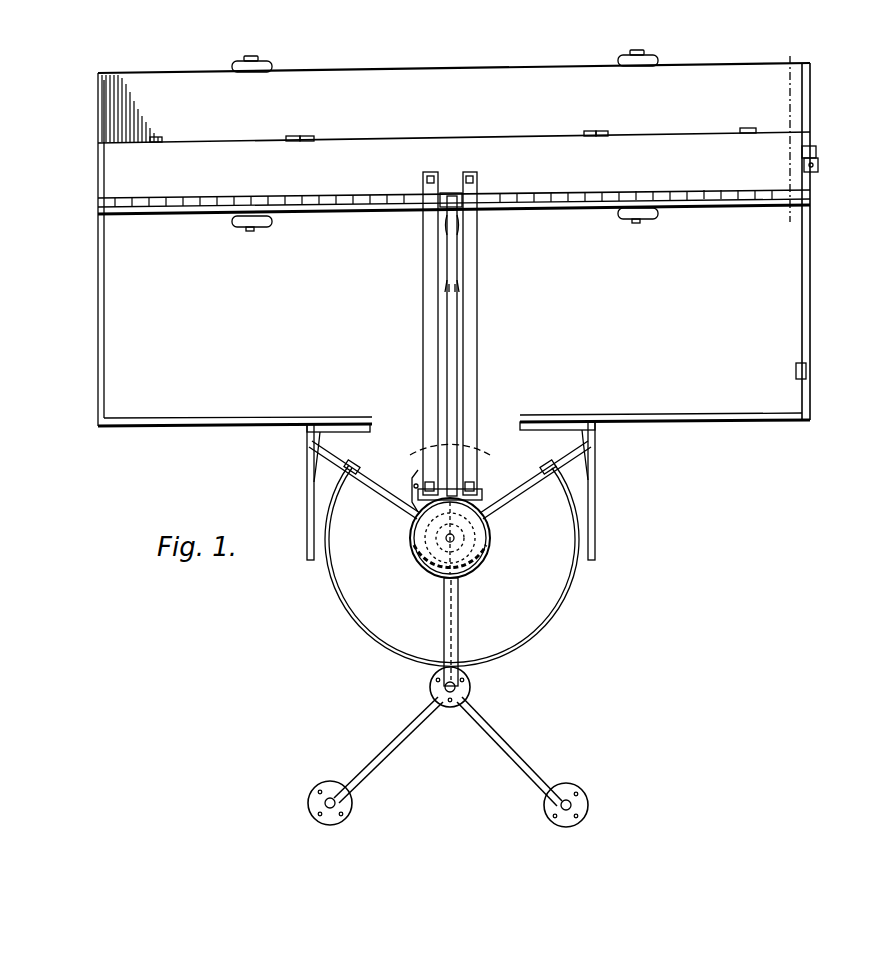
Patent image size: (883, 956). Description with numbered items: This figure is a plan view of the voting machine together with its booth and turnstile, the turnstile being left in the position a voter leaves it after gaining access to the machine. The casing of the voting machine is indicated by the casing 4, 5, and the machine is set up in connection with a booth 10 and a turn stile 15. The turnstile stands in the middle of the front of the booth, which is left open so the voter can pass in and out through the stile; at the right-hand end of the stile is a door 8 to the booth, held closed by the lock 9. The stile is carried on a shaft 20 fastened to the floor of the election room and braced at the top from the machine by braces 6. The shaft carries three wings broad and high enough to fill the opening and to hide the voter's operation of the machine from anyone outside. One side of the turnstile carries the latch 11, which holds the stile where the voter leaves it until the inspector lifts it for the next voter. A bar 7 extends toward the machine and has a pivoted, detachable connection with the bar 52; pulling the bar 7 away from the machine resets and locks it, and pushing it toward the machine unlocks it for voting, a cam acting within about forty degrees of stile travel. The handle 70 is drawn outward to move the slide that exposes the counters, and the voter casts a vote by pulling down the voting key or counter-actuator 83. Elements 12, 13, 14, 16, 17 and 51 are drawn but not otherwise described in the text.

The casing 4 is at (78, 128).
The casing 5 is at (816, 150).
The braces 6 is at (424, 352).
The bar 7 is at (459, 368).
The door 8 is at (811, 268).
The lock 9 is at (795, 371).
The booth 10 is at (100, 316).
The latch 11 is at (360, 475).
The cross bar 12 is at (478, 492).
The clamp 13 is at (414, 514).
The hub 14 is at (433, 546).
The turn stile 15 is at (482, 564).
The ring 16 is at (388, 612).
The stand 17 is at (448, 702).
The shaft 20 is at (455, 538).
The graduated rail 51 is at (365, 208).
The bar 52 is at (458, 205).
The handle 70 is at (818, 165).
The voting key or counter-actuator 83 is at (620, 198).